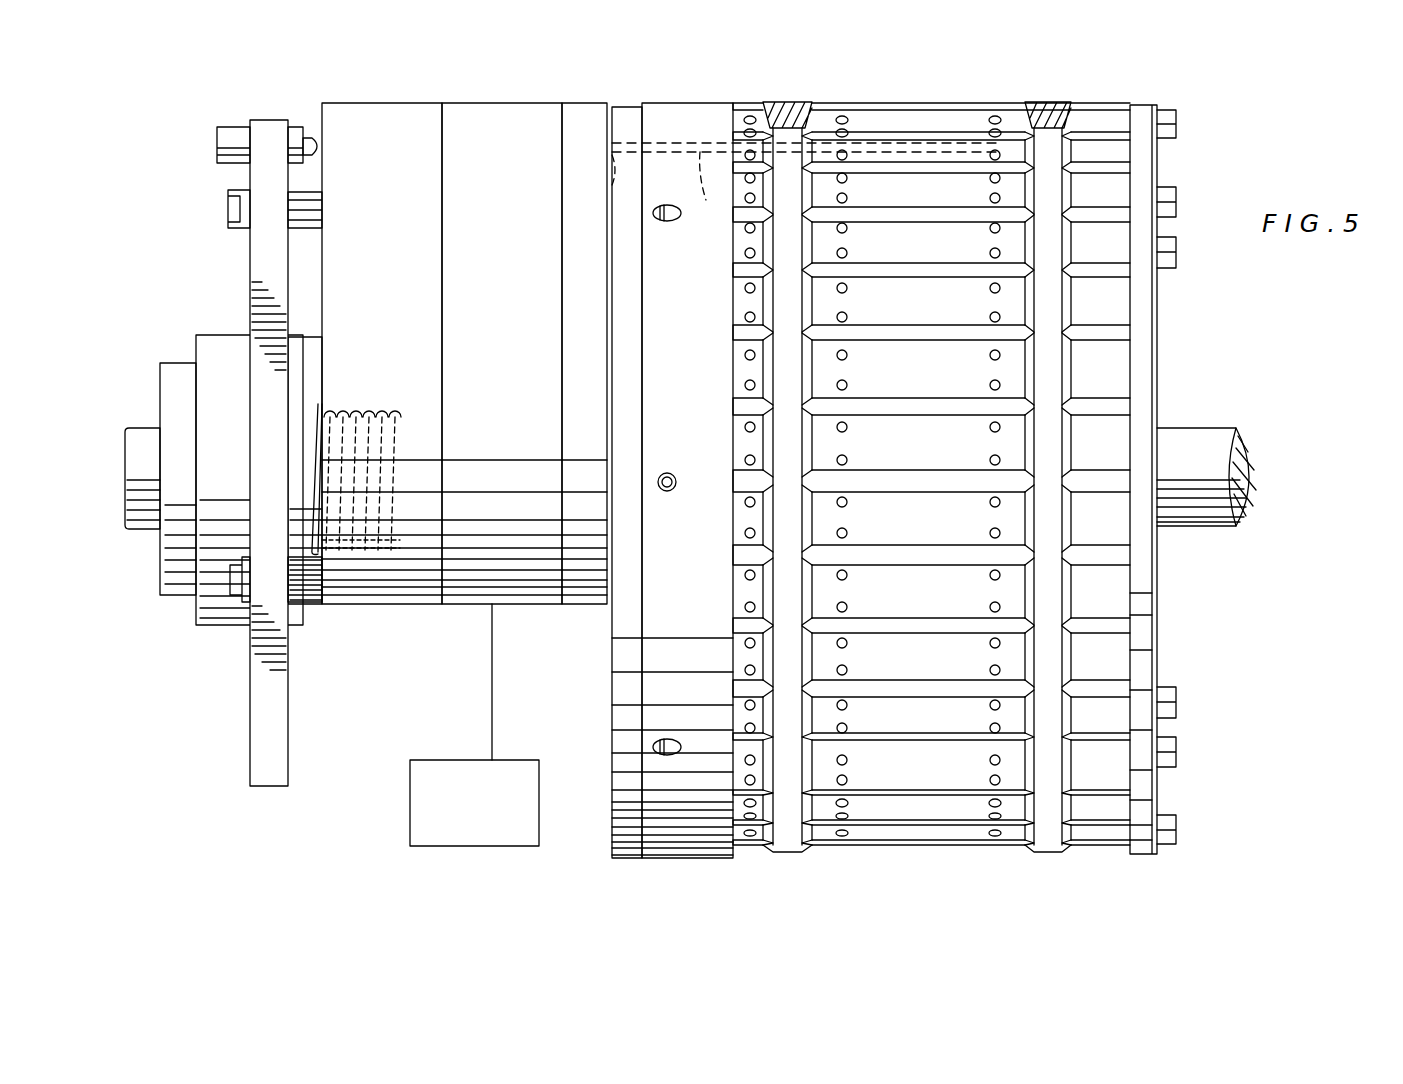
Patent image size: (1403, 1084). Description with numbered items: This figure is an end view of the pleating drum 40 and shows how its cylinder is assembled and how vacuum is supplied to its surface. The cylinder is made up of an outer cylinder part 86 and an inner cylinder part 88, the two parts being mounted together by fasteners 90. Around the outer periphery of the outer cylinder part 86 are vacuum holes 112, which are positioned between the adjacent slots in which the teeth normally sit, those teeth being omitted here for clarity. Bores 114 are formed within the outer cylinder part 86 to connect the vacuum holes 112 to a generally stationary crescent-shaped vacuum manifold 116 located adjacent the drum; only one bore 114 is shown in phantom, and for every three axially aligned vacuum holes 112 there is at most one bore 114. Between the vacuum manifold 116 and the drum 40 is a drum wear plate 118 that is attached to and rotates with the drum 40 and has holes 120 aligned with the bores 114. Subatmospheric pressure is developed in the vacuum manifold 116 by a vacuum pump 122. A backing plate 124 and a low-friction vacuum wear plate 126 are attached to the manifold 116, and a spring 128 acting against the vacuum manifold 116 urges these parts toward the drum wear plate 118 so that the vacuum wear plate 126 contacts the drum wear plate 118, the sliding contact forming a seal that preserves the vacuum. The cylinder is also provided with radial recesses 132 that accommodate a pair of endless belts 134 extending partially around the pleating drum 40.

The pleating drum 40 is at (693, 862).
The outer cylinder part 86 is at (705, 122).
The inner cylinder part 88 is at (1143, 370).
The fasteners 90 is at (1176, 198).
The vacuum holes 112 is at (745, 385).
The bores 114 is at (706, 200).
The vacuum manifold 116 is at (460, 103).
The drum wear plate 118 is at (628, 107).
The holes 120 is at (615, 150).
The vacuum pump 122 is at (462, 760).
The backing plate 124 is at (337, 103).
The vacuum wear plate 126 is at (580, 103).
The spring 128 is at (380, 412).
The radial recesses 132 is at (787, 856).
The endless belts 134 is at (790, 102).